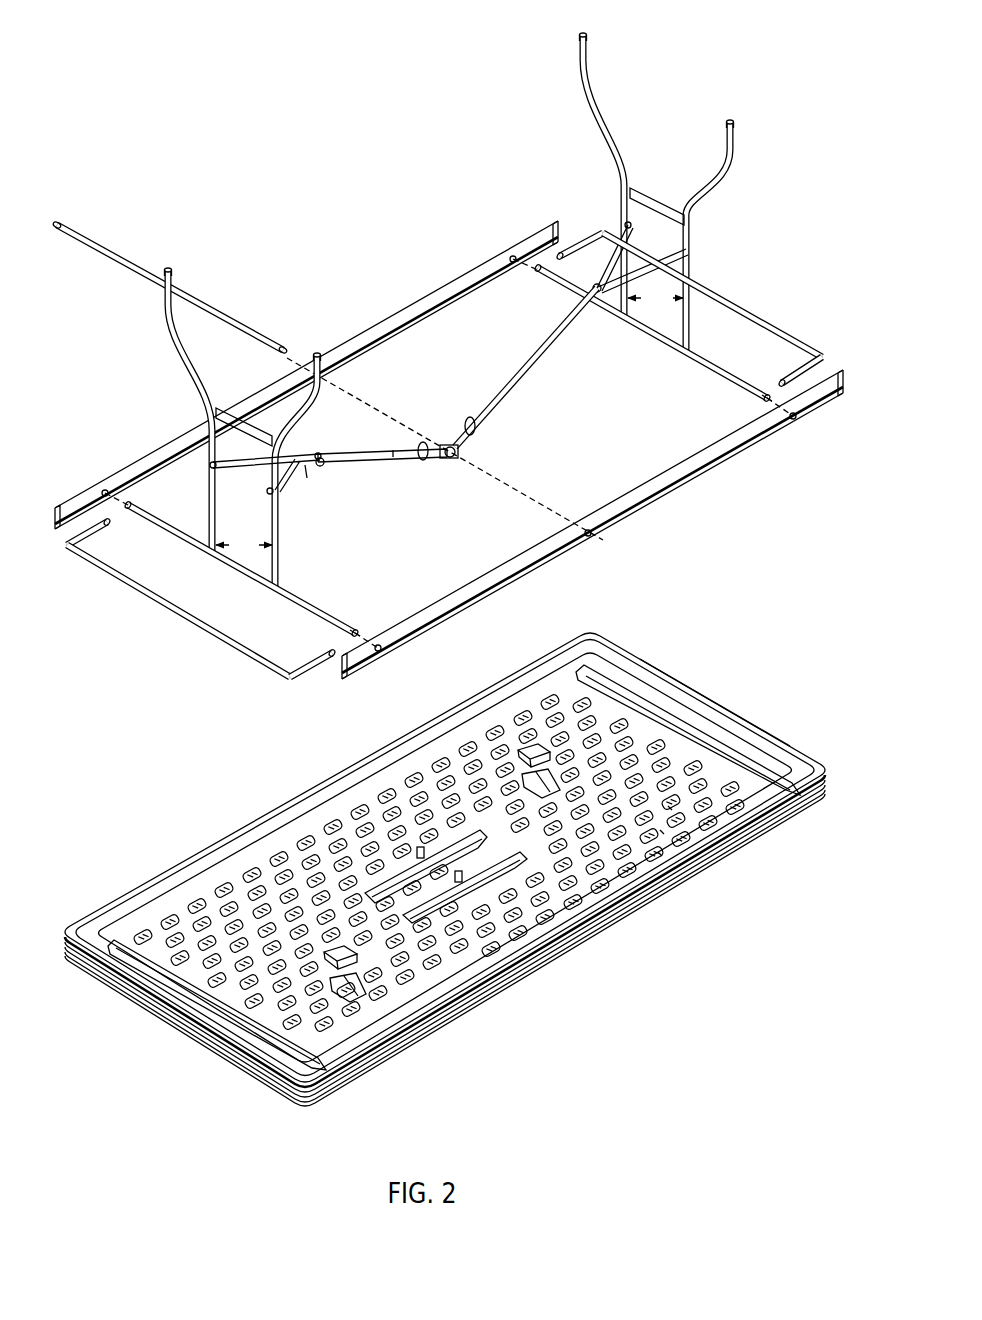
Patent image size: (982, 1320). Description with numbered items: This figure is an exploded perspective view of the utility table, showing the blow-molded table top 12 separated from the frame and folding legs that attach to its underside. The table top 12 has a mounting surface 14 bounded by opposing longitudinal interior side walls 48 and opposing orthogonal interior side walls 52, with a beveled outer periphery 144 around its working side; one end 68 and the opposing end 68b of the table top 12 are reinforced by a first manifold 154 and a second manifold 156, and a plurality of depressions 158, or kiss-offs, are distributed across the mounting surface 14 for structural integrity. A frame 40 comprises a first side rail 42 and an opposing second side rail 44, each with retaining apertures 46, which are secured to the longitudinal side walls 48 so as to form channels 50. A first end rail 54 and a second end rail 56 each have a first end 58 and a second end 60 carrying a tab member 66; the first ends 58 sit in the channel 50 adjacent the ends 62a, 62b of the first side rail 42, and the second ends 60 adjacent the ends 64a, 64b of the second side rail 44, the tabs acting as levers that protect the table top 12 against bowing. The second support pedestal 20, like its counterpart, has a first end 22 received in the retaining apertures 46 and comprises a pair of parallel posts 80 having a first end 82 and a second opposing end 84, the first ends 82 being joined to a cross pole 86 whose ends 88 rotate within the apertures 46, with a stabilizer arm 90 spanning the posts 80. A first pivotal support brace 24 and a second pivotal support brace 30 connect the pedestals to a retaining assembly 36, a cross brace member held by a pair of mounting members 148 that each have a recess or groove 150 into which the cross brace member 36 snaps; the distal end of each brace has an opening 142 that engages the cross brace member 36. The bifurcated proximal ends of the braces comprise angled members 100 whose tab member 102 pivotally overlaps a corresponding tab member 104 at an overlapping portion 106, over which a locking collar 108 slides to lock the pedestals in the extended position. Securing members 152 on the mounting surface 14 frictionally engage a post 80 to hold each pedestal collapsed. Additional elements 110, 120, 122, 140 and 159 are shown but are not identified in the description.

The table top 12 is at (455, 719).
The mounting surface 14 is at (453, 862).
The second support pedestal 20 is at (456, 335).
The first end 22 is at (195, 546).
The first pivotal support brace 24 is at (382, 456).
The second pivotal support brace 30 is at (516, 370).
The retaining assembly 36 is at (136, 257).
The frame 40 is at (305, 357).
The first side rail 42 is at (397, 322).
The second side rail 44 is at (476, 492).
The retaining apertures 46 is at (107, 497).
The longitudinal interior side walls 48 is at (198, 875).
The channels 50 is at (447, 454).
The orthogonal interior side walls 52 is at (459, 888).
The first end rail 54 is at (157, 602).
The second end rail 56 is at (760, 319).
The first end 58 is at (69, 552).
The second end 60 is at (281, 681).
The end of first side rail 62a is at (56, 506).
The end of first side rail 62b is at (554, 226).
The end of second side rail 64a is at (352, 675).
The end of second side rail 64b is at (830, 366).
The tab member 66 is at (103, 528).
The end of the table top 68 is at (139, 1006).
The end of the table top 68b is at (720, 705).
The posts 80 is at (449, 421).
The first end 82 is at (214, 568).
The second opposing end 84 is at (588, 66).
The cross pole 86 is at (322, 614).
The ends of cross pole 88 is at (130, 505).
The stabilizer arm 90 is at (232, 415).
The angled members 100 is at (267, 491).
The tab member 102 is at (316, 452).
The tab member 104 is at (323, 470).
The overlapping portion 106 is at (307, 472).
The locking collars 108 is at (423, 462).
The hole 110 is at (510, 256).
The handle bar 120 is at (191, 264).
The strut 122 is at (393, 449).
The handle end 140 is at (280, 335).
The opening 142 is at (457, 460).
The outer periphery 144 is at (770, 830).
The mounting member 148 is at (458, 871).
The recess or groove 150 is at (420, 854).
The securing members 152 is at (552, 778).
The first manifold 154 is at (258, 1024).
The second manifold 156 is at (655, 706).
The depressions 158 is at (662, 857).
The lip 159 is at (136, 896).